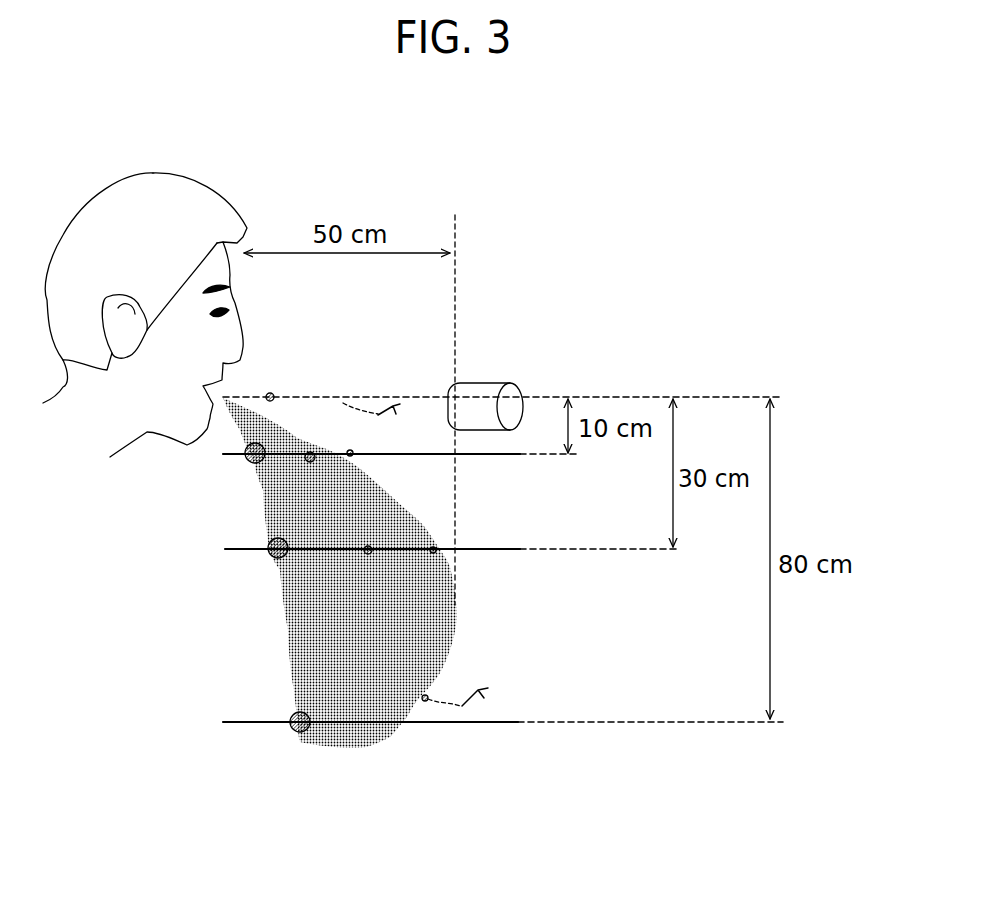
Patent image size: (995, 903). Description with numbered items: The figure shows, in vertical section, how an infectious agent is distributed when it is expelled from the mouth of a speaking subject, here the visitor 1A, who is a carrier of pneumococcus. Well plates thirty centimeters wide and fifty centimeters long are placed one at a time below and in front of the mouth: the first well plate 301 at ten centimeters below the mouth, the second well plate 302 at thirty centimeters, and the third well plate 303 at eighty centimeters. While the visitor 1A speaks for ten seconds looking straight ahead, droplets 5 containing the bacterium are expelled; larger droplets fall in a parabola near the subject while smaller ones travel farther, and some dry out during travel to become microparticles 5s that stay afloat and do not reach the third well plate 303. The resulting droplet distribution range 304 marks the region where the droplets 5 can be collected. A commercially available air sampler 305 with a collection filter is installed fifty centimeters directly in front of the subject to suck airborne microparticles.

The visitor 1A is at (153, 173).
The first well plate 301 is at (223, 455).
The second well plate 302 is at (225, 549).
The third well plate 303 is at (223, 722).
The droplet distribution range 304 is at (313, 627).
The air sampler 305 is at (500, 383).
The droplets 5 is at (255, 465).
The microparticles 5s is at (425, 697).